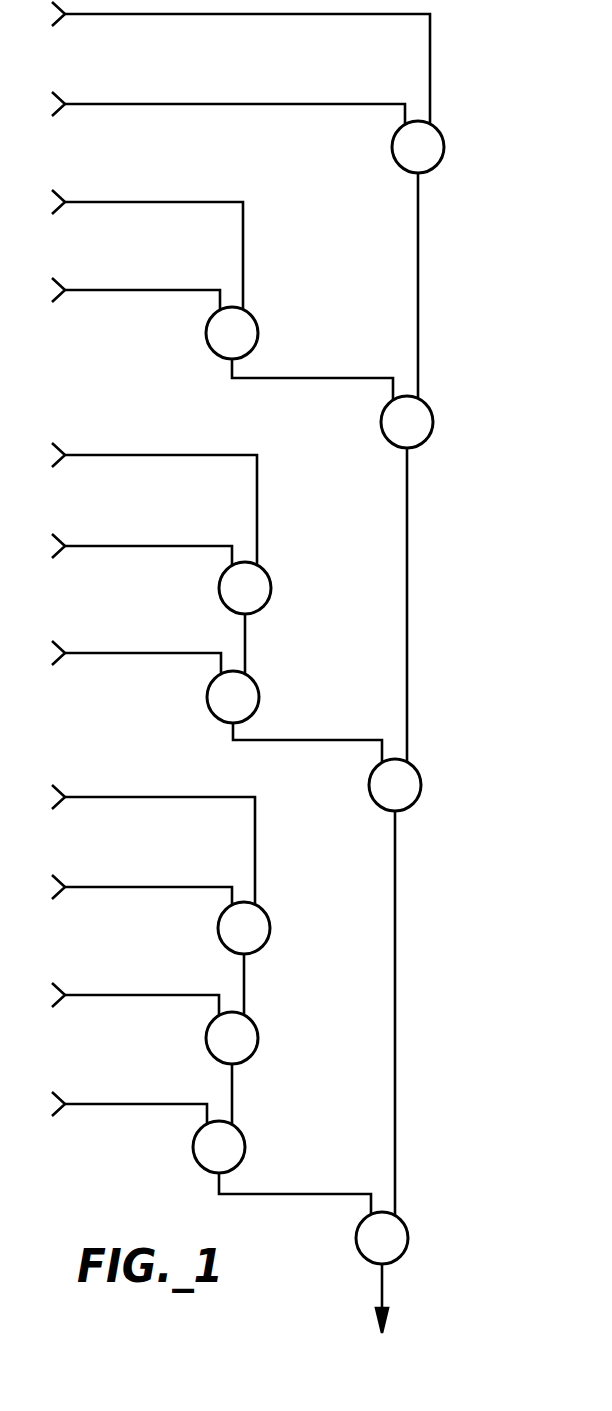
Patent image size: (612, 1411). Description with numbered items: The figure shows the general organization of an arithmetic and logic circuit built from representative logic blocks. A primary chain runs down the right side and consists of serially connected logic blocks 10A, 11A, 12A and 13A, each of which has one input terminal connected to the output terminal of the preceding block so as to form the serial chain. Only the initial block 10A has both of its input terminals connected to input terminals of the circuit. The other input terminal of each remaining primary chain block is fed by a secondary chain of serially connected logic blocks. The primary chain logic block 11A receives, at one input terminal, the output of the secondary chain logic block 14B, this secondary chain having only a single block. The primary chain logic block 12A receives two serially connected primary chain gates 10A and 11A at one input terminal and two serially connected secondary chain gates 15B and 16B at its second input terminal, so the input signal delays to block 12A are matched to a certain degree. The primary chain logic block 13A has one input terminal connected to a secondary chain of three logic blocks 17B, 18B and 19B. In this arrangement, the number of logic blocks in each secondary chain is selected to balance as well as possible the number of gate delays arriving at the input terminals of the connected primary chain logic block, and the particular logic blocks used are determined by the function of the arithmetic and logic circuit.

The primary chain logic block 10A is at (420, 150).
The primary chain logic block 11A is at (409, 427).
The primary chain logic block 12A is at (403, 789).
The primary chain logic block 13A is at (390, 1242).
The secondary chain logic block 14B is at (240, 330).
The secondary chain logic block 15B is at (253, 592).
The secondary chain logic block 16B is at (241, 700).
The secondary chain logic block 17B is at (253, 932).
The secondary chain logic block 18B is at (240, 1042).
The secondary chain logic block 19B is at (228, 1150).